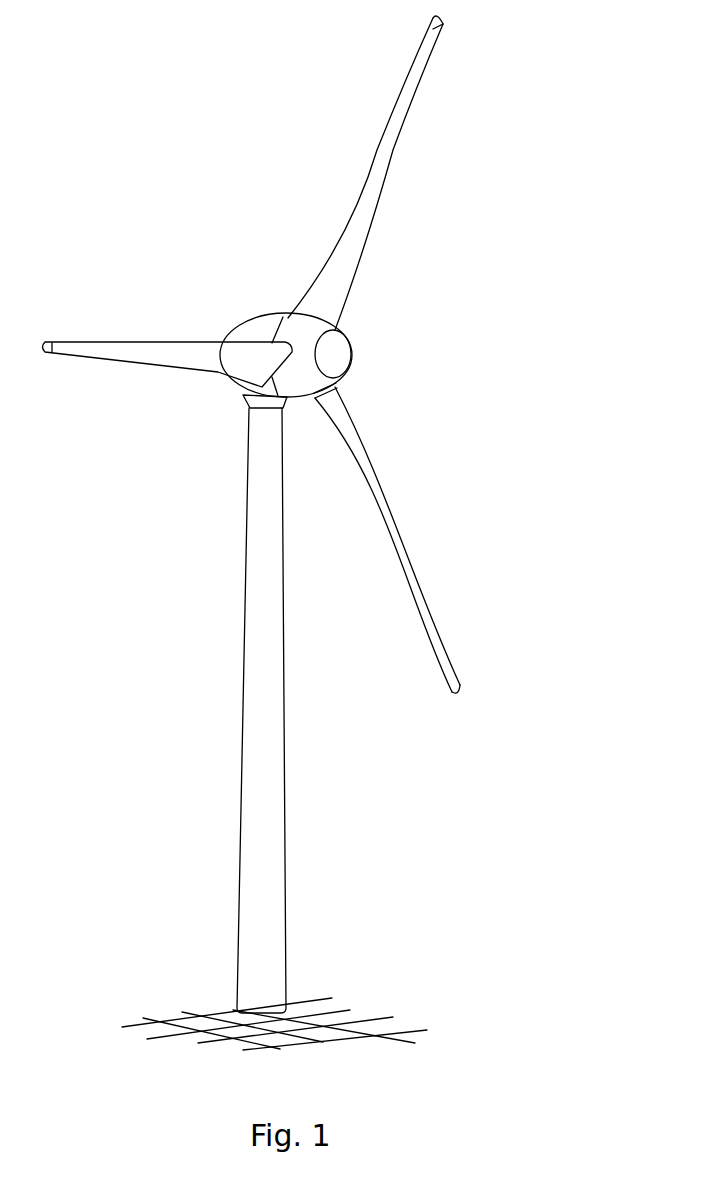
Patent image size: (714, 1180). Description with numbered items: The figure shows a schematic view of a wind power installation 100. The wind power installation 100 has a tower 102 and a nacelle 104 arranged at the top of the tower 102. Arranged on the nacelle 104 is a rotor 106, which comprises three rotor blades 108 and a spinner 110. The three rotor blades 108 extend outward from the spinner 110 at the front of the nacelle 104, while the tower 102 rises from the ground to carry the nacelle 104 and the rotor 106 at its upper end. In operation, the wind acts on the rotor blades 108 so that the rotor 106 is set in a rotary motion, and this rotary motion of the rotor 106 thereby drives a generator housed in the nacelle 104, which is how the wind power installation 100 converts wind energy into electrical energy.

The wind power installation 100 is at (208, 469).
The tower 102 is at (268, 803).
The nacelle 104 is at (260, 332).
The rotor 106 is at (414, 286).
The rotor blades 108 is at (106, 342).
The spinner 110 is at (340, 354).